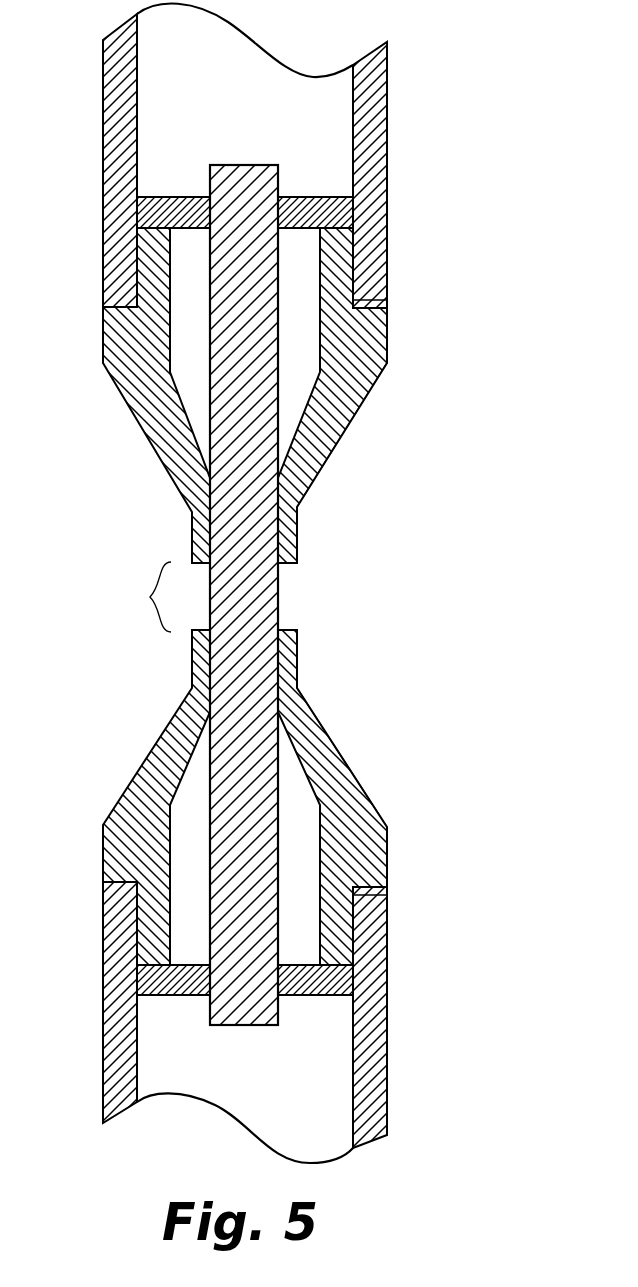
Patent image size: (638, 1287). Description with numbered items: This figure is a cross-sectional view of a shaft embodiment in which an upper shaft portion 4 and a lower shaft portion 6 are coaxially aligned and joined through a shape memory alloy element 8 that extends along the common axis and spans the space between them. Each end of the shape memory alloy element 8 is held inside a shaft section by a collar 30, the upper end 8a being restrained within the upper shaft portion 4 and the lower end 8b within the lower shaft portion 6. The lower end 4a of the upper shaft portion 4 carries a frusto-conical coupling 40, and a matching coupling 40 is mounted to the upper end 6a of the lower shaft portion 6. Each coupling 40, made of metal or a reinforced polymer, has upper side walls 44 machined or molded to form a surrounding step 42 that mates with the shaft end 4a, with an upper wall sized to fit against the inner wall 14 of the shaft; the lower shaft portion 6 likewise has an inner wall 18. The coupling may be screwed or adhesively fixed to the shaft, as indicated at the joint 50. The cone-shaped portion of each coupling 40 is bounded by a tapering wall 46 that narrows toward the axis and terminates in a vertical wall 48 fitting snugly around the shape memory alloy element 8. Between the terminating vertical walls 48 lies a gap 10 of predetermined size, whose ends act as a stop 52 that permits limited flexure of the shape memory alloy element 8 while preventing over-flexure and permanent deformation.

The upper shaft portion 4 is at (387, 182).
The lower end of upper shaft portion 4a is at (393, 240).
The lower shaft portion 6 is at (388, 1057).
The upper end of lower shaft portion 6a is at (391, 894).
The shape memory alloy element 8 is at (258, 607).
The upper end of shape memory alloy element 8a is at (279, 174).
The lower end of shape memory alloy element 8b is at (279, 1022).
The gap 10 is at (143, 597).
The inner wall of upper shaft section 14 is at (350, 118).
The inner wall of lower shaft portion 18 is at (350, 1102).
The collar 30 is at (161, 197).
The frusto-conical coupling 40 is at (360, 371).
The step 42 is at (369, 307).
The upper side walls of coupling 44 is at (355, 270).
The tapering wall 46 is at (344, 451).
The vertical wall 48 is at (303, 540).
The joint 50 is at (361, 236).
The stop 52 is at (284, 563).